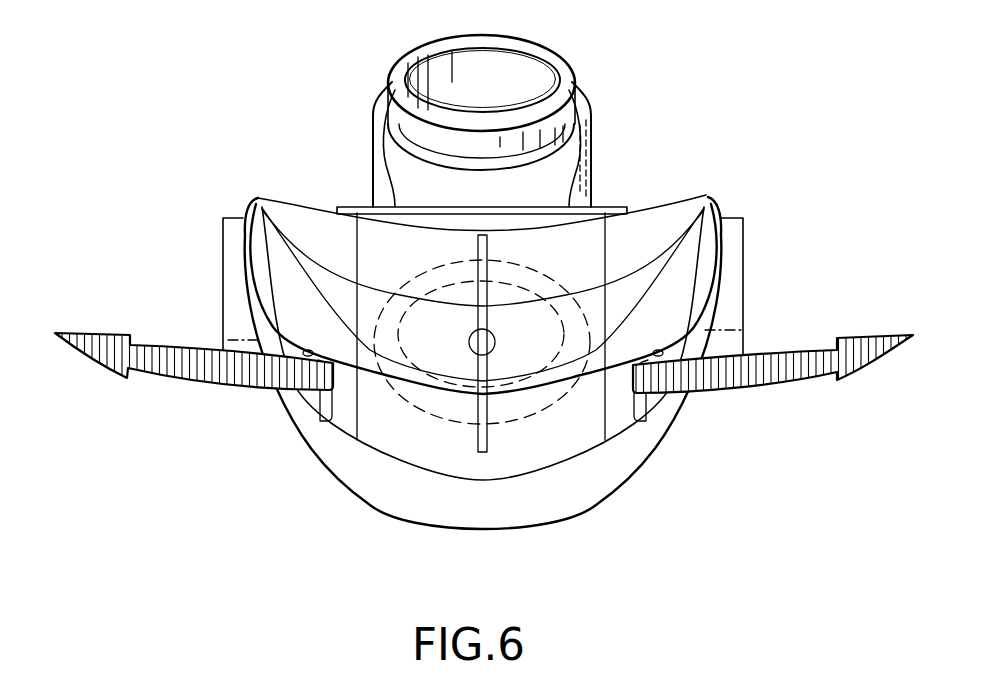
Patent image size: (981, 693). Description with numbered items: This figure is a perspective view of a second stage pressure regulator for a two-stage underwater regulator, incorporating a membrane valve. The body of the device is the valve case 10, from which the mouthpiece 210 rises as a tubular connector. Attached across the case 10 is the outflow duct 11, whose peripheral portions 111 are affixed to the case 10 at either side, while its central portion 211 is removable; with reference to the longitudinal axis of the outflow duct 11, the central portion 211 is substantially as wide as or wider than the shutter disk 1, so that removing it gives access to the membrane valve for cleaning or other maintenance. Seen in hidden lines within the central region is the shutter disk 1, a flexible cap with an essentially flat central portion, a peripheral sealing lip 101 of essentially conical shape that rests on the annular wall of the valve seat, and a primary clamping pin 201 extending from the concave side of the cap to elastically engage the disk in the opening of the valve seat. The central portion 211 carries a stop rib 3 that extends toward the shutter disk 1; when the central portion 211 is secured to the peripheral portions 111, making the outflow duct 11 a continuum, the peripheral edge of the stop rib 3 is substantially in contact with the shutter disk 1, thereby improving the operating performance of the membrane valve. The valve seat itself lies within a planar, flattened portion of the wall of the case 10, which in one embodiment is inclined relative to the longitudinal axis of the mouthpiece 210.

The shutter disk 1 is at (452, 433).
The stop rib 3 is at (517, 415).
The case 10 is at (605, 174).
The outflow duct 11 is at (340, 458).
The peripheral sealing lip 101 is at (415, 413).
The peripheral portions 111 is at (301, 204).
The primary clamping pin 201 is at (496, 338).
The mouthpiece 210 is at (573, 124).
The central portion 211 is at (596, 415).